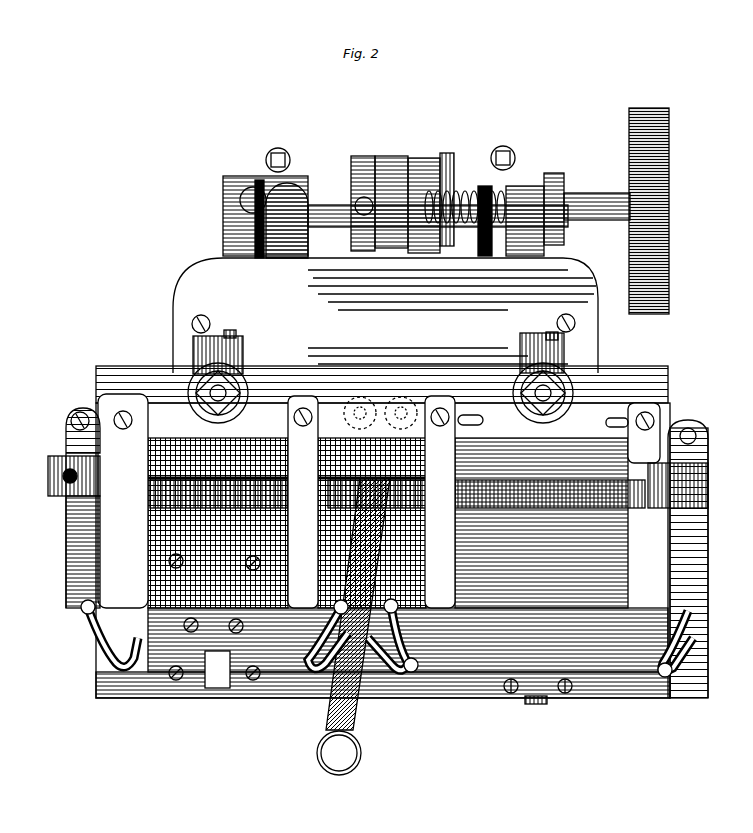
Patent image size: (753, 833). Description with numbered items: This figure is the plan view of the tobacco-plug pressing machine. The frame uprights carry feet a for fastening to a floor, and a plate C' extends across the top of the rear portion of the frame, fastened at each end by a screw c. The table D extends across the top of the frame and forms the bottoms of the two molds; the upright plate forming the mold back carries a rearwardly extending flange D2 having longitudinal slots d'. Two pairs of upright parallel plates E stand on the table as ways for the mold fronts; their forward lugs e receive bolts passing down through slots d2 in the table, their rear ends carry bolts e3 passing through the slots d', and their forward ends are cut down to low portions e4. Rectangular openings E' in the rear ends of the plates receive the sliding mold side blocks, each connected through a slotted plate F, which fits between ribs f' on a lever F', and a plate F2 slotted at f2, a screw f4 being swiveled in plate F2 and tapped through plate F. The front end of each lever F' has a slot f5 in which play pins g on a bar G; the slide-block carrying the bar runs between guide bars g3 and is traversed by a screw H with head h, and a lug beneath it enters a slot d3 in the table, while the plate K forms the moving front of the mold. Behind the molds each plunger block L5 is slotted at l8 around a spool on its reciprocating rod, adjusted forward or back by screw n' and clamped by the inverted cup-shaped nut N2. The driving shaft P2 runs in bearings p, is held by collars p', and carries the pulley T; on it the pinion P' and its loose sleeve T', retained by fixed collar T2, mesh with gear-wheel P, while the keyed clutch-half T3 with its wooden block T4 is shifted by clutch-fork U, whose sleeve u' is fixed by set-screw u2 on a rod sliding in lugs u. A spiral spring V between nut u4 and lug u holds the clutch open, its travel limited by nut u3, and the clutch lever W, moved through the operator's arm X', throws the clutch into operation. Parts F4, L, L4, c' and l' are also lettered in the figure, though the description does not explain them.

The lever W is at (285, 238).
The plate C' is at (351, 331).
The lugs u is at (265, 216).
The fixed collar T2 is at (283, 192).
The bearings or boxes p is at (390, 150).
The clutch-fork U is at (357, 165).
The sleeve u' is at (349, 191).
The set-screw u2 is at (345, 213).
The clutch-half T3 is at (382, 165).
The loose sleeve T' is at (424, 189).
The pinion P' is at (447, 185).
The nut u4 is at (410, 190).
The spiral spring V is at (470, 225).
The annular wooden block T4 is at (400, 240).
The gear-wheel P is at (425, 260).
The feet or lugs a is at (525, 221).
The collars p' is at (558, 195).
The shaft P2 is at (582, 192).
The nut u3 is at (548, 236).
The pulley or wheel T is at (658, 211).
The bolt or screw c is at (386, 315).
The screw n' is at (391, 327).
The slot l8 is at (233, 338).
The block L5 is at (237, 358).
The inverted cup-shaped nut N2 is at (182, 380).
The upright parallel plates E is at (379, 501).
The bolts e3 is at (384, 422).
The longitudinal slots d' is at (396, 427).
The horizontal flange D2 is at (380, 411).
The lever F4 is at (348, 470).
The plate F2 is at (388, 470).
The parallel ribs f' is at (392, 484).
The screw f4 is at (68, 492).
The plate F is at (215, 471).
The plate K is at (150, 477).
The bar L is at (286, 517).
The bar L4 is at (371, 467).
The rectangular openings E' is at (389, 445).
The lever F' is at (392, 510).
The slot f2 is at (387, 553).
The table D is at (400, 720).
The crank or lever arm X' is at (339, 761).
The pins g is at (72, 604).
The slot f5 is at (100, 645).
The guide blocks or bars g3 is at (178, 672).
The head h is at (528, 775).
The lugs or flanges e is at (118, 680).
The low portions e4 is at (134, 680).
The slots d2 is at (150, 680).
The slot d3 is at (215, 682).
The base c' is at (653, 711).
The bar G is at (382, 633).
The screw H is at (375, 631).
The bar l' is at (190, 585).